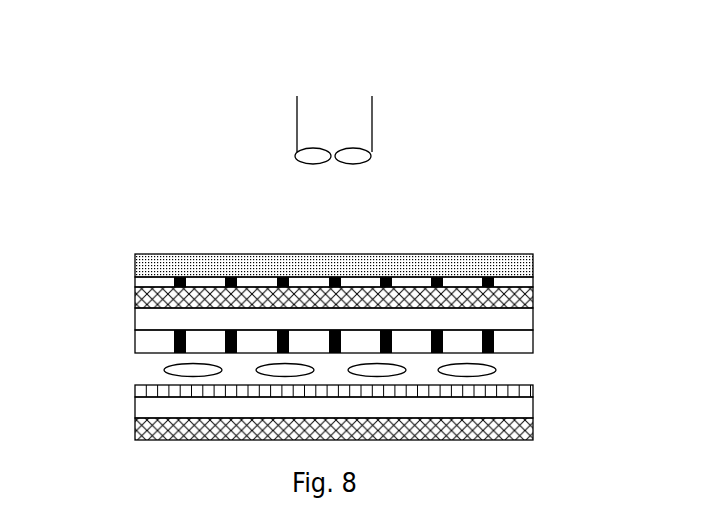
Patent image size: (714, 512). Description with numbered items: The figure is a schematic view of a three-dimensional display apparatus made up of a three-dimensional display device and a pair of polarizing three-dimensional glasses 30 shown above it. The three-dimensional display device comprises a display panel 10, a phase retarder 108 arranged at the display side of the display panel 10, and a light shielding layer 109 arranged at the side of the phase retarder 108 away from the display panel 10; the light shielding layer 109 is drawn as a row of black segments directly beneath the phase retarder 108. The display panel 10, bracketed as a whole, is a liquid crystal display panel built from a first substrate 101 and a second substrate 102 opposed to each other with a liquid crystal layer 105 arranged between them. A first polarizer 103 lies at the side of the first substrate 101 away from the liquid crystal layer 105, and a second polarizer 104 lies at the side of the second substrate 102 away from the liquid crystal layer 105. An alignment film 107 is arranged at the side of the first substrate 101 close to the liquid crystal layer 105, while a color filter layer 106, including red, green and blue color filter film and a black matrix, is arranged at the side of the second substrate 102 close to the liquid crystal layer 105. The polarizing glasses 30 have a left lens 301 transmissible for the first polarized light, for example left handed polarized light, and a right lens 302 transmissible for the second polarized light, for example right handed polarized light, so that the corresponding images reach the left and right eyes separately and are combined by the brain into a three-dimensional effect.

The display panel 10 is at (133, 298).
The pair of polarizing 3D glasses 30 is at (339, 116).
The left lens 301 is at (357, 163).
The right lens 302 is at (310, 163).
The first substrate 101 is at (533, 406).
The second substrate 102 is at (527, 323).
The first polarizer 103 is at (533, 430).
The second polarizer 104 is at (527, 295).
The liquid crystal layer 105 is at (527, 372).
The color filter layer 106 is at (527, 344).
The alignment film 107 is at (533, 391).
The phase retarder 108 is at (527, 260).
The light shielding layer 109 is at (522, 278).